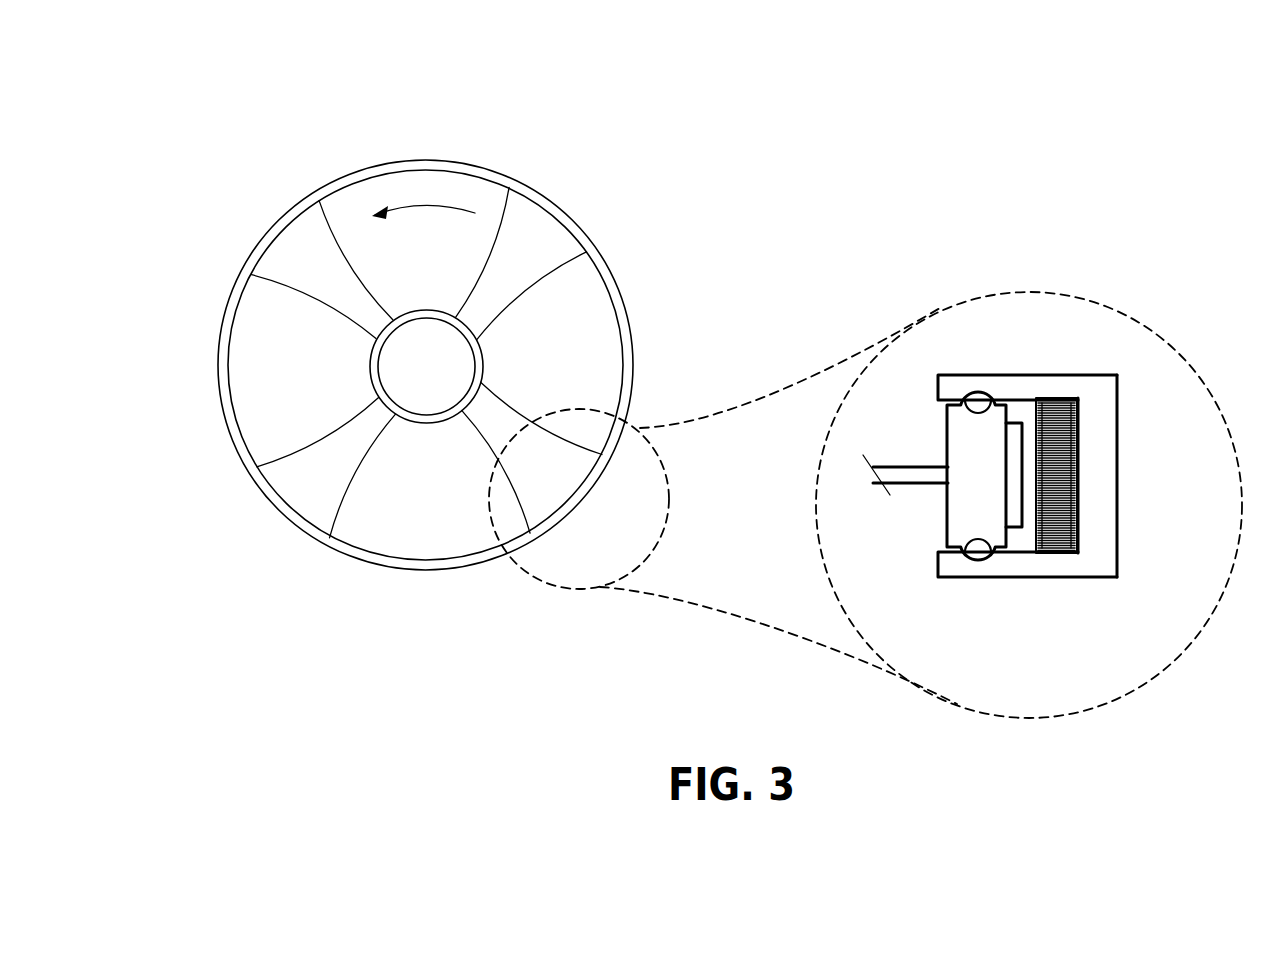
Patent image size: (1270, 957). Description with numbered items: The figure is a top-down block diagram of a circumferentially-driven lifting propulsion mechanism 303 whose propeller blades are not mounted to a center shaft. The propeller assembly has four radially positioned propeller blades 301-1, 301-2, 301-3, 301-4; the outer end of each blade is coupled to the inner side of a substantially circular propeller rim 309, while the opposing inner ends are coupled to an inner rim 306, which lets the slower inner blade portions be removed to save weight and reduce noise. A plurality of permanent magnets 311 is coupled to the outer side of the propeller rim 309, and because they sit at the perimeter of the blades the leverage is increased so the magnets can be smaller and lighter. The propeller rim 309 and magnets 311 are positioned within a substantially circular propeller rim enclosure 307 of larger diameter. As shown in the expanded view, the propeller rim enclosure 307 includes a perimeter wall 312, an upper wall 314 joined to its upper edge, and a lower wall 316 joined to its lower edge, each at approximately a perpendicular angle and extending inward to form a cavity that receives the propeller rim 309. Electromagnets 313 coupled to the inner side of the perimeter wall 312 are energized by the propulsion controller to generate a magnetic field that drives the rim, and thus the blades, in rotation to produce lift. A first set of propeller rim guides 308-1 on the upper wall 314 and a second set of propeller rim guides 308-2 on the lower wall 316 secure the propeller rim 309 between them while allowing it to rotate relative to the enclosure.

The lifting propulsion mechanism 303 is at (449, 90).
The propeller blade 301-1 is at (538, 228).
The propeller blade 301-2 is at (545, 443).
The propeller blade 301-3 is at (304, 493).
The propeller blade 301-4 is at (298, 247).
The inner rim 306 is at (483, 350).
The propeller rim enclosure 307 is at (611, 274).
The first set of propeller rim guides 308-1 is at (1020, 383).
The second set of propeller rim guides 308-2 is at (980, 552).
The propeller rim 309 is at (990, 440).
The magnets 311 is at (1017, 515).
The perimeter wall 312 is at (1100, 435).
The electromagnets 313 is at (1080, 498).
The upper wall 314 is at (979, 402).
The lower wall 316 is at (1002, 565).